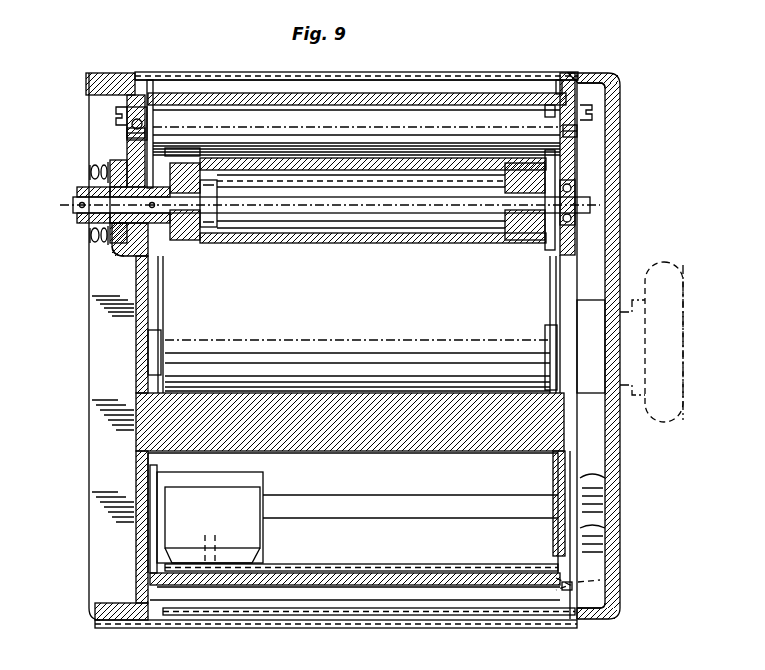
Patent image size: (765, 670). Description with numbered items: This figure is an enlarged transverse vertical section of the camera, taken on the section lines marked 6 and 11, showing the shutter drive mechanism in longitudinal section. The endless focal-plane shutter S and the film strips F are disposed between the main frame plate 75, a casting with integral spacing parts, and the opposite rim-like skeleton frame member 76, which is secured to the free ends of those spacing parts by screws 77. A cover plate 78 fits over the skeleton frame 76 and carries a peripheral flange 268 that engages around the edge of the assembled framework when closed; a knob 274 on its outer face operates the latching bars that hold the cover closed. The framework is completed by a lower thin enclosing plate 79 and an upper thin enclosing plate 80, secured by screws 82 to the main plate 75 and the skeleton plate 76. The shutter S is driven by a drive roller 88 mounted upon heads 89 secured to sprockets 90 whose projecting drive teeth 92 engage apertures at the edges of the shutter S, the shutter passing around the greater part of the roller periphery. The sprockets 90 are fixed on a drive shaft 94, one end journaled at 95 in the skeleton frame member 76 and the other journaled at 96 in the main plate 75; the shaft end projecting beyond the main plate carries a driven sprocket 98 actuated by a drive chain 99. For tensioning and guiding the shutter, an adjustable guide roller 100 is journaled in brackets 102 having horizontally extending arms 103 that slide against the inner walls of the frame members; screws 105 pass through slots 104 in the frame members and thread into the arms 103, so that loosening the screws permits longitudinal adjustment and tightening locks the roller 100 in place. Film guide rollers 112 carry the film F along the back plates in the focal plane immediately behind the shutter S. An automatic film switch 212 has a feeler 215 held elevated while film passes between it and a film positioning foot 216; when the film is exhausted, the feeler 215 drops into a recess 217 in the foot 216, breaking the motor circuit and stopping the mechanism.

The section line 6- 6 is at (35, 170).
The section line 11- 11 is at (578, 668).
The main frame plate 75 is at (136, 318).
The skeleton frame member 76 is at (578, 138).
The screws 77 is at (600, 578).
The cover plate 78 is at (620, 250).
The lower enclosing plate 79 is at (292, 628).
The upper enclosing plate 80 is at (408, 73).
The screws 82 is at (130, 73).
The drive roller 88 is at (305, 244).
The heads 89 is at (222, 245).
The drive sprockets 90 is at (185, 244).
The drive teeth 92 is at (185, 152).
The drive shaft 94 is at (73, 205).
The bearing 95 is at (570, 186).
The bearing 96 is at (115, 257).
The driven sprocket 98 is at (90, 181).
The drive chain 99 is at (90, 237).
The adjustable guide roller 100 is at (256, 93).
The brackets 102 is at (127, 133).
The arms 103 is at (151, 85).
The slots 104 is at (150, 115).
The screws 105 is at (116, 113).
The film guide rollers 112 is at (600, 541).
The automatic film switch 212 is at (265, 500).
The feeler 215 is at (228, 555).
The film positioning foot 216 is at (300, 585).
The recess 217 is at (202, 587).
The peripheral flange 268 is at (608, 80).
The knob 274 is at (668, 322).
The focal-plane shutter S is at (362, 158).
The film F is at (355, 570).